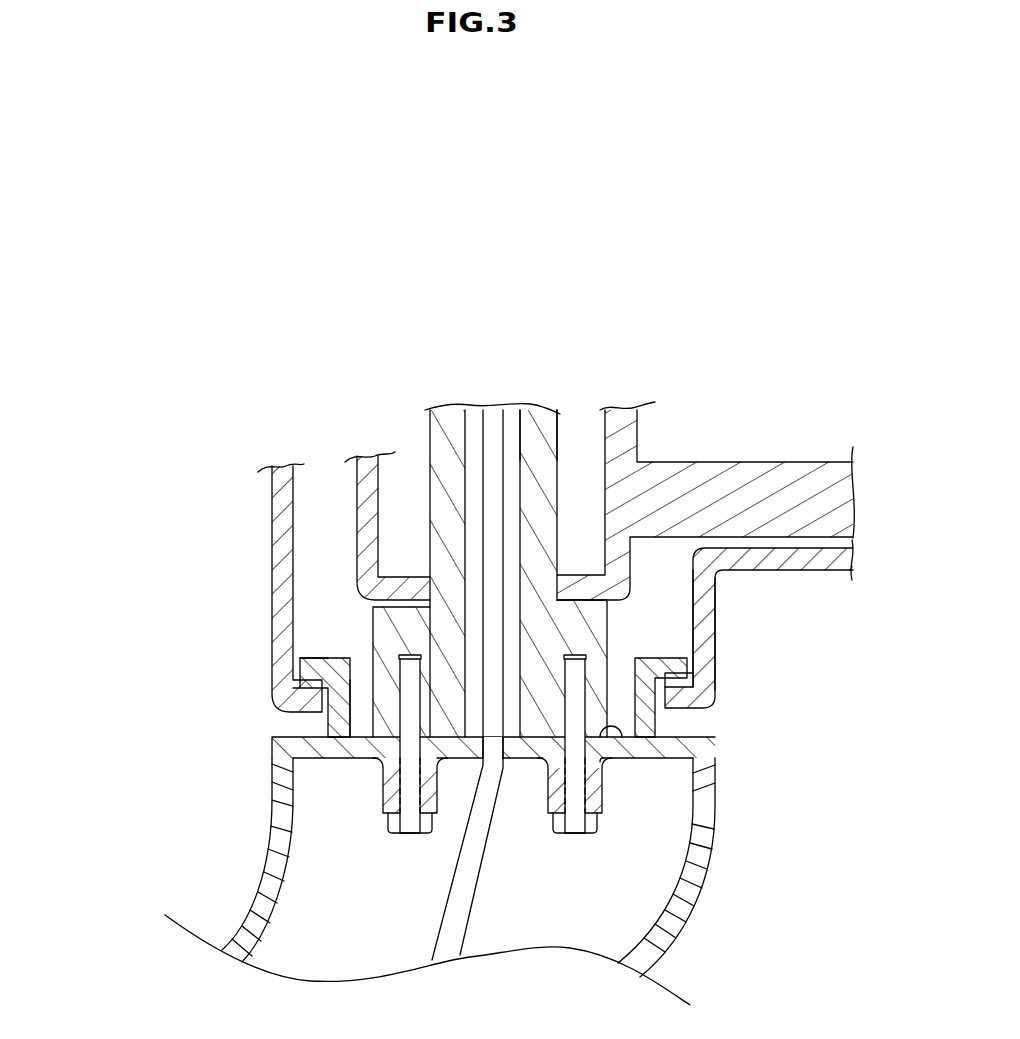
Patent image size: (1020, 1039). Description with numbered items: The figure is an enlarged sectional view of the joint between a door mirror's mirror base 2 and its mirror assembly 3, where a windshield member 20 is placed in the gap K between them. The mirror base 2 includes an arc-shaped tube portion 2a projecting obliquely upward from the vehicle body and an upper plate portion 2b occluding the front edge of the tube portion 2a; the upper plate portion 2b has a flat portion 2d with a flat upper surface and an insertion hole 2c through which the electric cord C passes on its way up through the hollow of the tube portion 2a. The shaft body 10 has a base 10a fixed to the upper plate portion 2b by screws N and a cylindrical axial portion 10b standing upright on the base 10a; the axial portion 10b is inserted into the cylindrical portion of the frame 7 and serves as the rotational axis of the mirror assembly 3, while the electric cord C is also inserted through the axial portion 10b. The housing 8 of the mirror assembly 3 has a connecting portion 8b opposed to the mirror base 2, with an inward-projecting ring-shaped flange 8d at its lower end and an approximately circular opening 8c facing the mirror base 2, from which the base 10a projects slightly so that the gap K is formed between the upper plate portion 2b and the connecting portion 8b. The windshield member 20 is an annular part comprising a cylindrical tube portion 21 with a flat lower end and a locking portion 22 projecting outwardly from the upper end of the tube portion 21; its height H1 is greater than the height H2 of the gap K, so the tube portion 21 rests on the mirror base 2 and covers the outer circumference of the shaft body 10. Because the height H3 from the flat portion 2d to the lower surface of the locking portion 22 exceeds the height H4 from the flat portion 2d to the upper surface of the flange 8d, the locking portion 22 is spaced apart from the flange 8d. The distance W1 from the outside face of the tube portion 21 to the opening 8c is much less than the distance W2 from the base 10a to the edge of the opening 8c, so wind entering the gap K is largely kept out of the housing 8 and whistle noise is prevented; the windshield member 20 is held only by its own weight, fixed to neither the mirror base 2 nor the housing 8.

The mirror base 2 is at (492, 865).
The tube portion 2a is at (716, 827).
The upper plate portion 2b is at (632, 760).
The insertion hole 2c is at (506, 765).
The flat portion 2d is at (620, 740).
The mirror assembly 3 is at (725, 352).
The frame 7 is at (770, 460).
The housing 8 is at (268, 492).
The connecting portion 8b is at (750, 616).
The opening 8c is at (665, 718).
The flange 8d is at (716, 673).
The shaft body 10 is at (413, 431).
The base 10a is at (390, 623).
The axial portion 10b is at (558, 452).
The windshield member 20 is at (327, 639).
The tube portion 21 is at (350, 686).
The locking portion 22 is at (313, 658).
The gap K is at (701, 735).
The screws N is at (404, 832).
The electric cord C is at (447, 932).
The height of the tube portion H1 is at (43, 659).
The height of the gap H2 is at (239, 726).
The height H3 is at (98, 681).
The height H4 is at (168, 725).
The distance W1 is at (322, 712).
The distance W2 is at (373, 760).